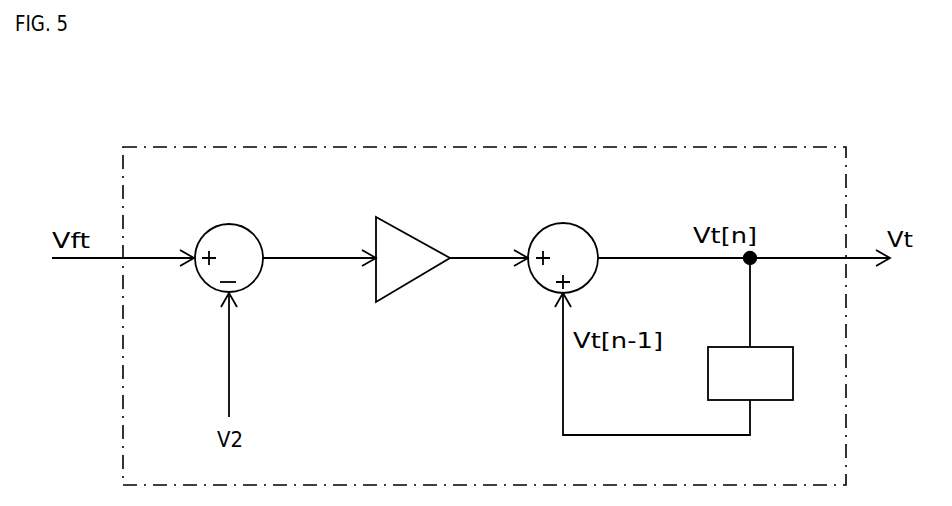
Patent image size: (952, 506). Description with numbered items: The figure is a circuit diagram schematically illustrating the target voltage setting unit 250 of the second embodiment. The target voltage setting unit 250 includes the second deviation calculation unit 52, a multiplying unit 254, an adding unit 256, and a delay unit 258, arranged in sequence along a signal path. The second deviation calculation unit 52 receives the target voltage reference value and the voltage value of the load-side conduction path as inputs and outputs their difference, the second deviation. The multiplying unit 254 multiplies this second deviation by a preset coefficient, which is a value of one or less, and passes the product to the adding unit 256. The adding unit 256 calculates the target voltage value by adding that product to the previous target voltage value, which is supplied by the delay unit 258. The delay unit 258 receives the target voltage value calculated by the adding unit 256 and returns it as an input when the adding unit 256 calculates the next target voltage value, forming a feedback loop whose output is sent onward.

The target voltage setting unit 250 is at (775, 147).
The second deviation calculation unit 52 is at (247, 229).
The multiplying unit 254 is at (412, 237).
The adding unit 256 is at (575, 226).
The delay unit 258 is at (773, 347).